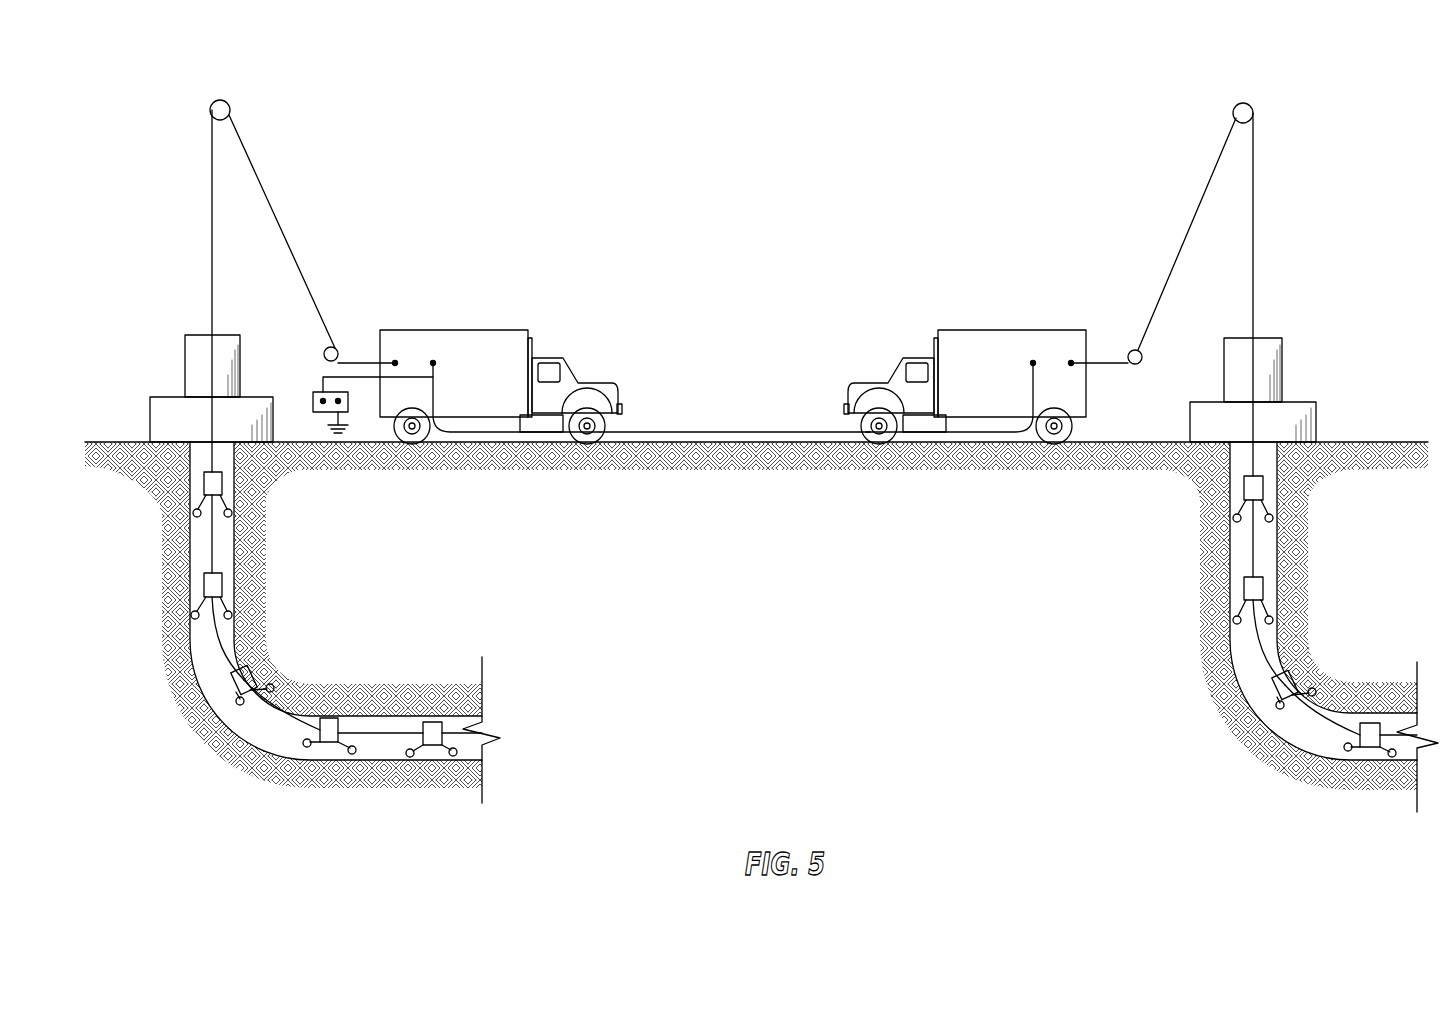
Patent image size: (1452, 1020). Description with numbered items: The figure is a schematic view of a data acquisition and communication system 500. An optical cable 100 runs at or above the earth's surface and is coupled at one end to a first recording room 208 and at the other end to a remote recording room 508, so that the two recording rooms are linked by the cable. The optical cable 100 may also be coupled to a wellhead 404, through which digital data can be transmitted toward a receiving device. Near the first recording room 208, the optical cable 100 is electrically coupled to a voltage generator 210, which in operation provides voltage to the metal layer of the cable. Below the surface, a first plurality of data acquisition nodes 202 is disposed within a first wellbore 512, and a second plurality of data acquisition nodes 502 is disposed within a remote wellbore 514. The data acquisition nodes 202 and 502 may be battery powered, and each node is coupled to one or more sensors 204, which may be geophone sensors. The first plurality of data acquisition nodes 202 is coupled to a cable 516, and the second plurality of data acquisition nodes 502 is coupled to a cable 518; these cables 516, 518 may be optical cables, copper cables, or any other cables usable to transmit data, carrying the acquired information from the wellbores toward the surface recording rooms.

The data acquisition and communication system 500 is at (1357, 92).
The wellhead 404 is at (185, 368).
The voltage generator 210 is at (313, 402).
The first recording room 208 is at (455, 330).
The optical cable 100 is at (708, 430).
The remote recording room 508 is at (1010, 332).
The first plurality of data acquisition nodes 202 is at (223, 484).
The sensors 204 is at (233, 516).
The second plurality of data acquisition nodes 502 is at (1263, 487).
The first wellbore 512 is at (200, 660).
The cable 516 is at (292, 713).
The remote wellbore 514 is at (1237, 665).
The cable 518 is at (1330, 715).